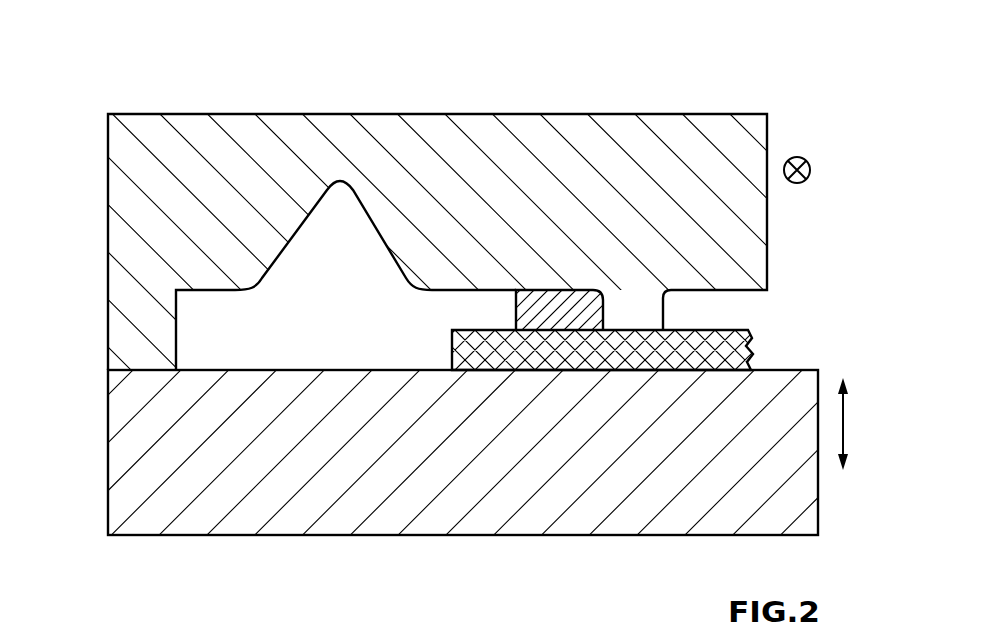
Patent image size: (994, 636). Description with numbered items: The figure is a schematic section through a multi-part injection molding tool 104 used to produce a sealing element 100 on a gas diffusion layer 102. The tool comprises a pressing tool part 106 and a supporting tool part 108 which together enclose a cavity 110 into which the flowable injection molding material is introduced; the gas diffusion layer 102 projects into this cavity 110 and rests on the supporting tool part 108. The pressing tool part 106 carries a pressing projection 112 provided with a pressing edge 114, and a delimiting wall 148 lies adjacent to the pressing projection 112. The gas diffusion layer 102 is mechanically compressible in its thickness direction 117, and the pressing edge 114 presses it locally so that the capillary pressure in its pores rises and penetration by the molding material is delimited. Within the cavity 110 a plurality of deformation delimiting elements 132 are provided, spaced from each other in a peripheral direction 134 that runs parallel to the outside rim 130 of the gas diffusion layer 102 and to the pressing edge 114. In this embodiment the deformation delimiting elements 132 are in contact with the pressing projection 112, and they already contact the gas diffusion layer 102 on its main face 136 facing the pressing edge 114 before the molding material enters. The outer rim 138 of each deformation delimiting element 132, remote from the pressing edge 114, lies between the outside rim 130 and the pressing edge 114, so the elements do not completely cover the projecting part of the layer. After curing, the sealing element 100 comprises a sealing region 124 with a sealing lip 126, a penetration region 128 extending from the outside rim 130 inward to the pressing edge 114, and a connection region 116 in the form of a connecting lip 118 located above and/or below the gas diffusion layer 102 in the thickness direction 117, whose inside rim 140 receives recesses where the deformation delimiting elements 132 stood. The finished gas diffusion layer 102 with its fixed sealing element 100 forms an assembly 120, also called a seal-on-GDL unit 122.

The sealing element 100 is at (497, 320).
The gas diffusion layer 102 is at (748, 352).
The injection molding tool 104 is at (497, 212).
The pressing tool part 106 is at (747, 259).
The supporting tool part 108 is at (793, 493).
The cavity 110 is at (357, 327).
The pressing projection 112 is at (659, 317).
The pressing edge 114 is at (611, 329).
The connection region 116 is at (450, 274).
The thickness direction 117 is at (843, 425).
The connecting lip 118 is at (489, 274).
The assembly 120 is at (341, 389).
The seal-on-GDL unit 122 is at (206, 382).
The sealing region 124 is at (158, 330).
The sealing lip 126 is at (343, 165).
The penetration region 128 is at (570, 394).
The outside rim 130 is at (452, 347).
The deformation delimiting element 132 is at (568, 305).
The peripheral direction 134 is at (810, 170).
The main face 136 is at (550, 313).
The outer rim 138 is at (520, 308).
The inside rim 140 is at (535, 305).
The delimiting wall 148 is at (608, 328).